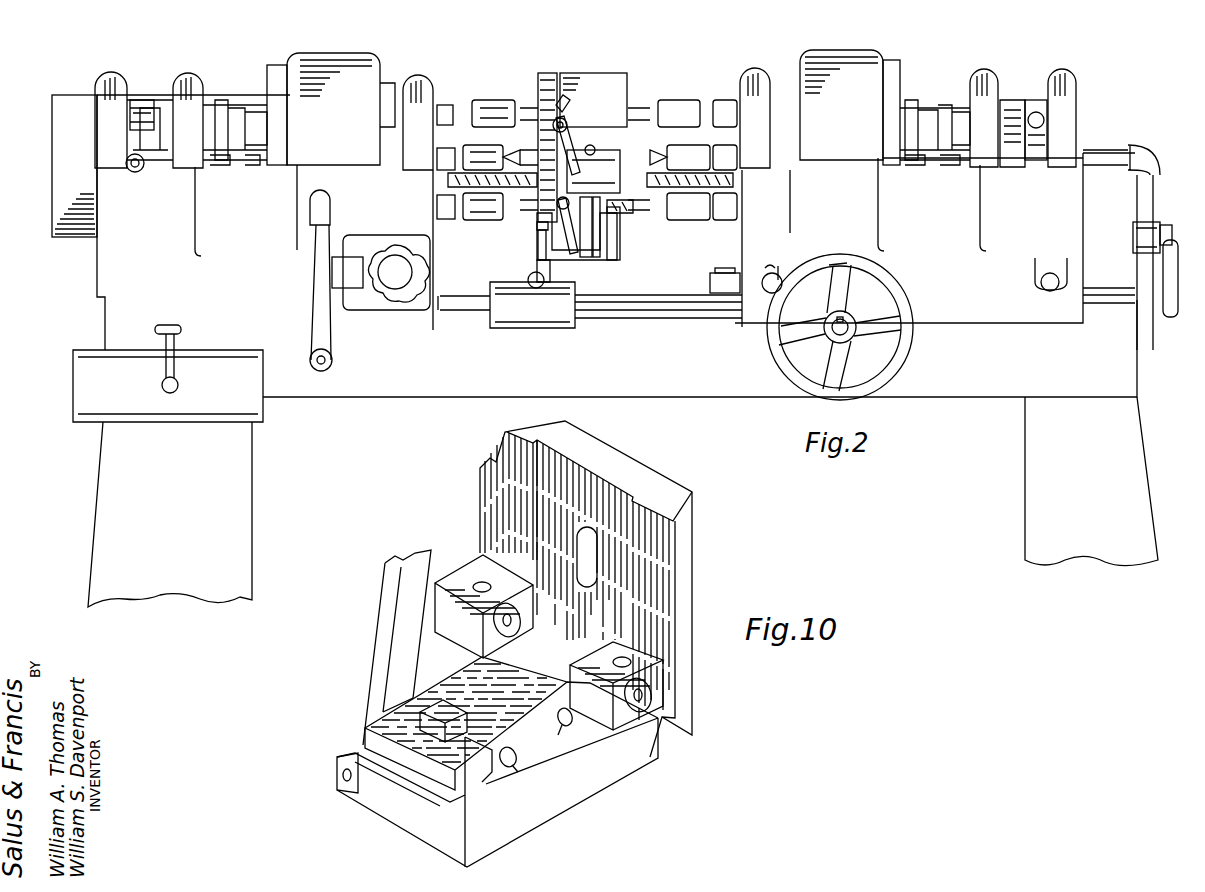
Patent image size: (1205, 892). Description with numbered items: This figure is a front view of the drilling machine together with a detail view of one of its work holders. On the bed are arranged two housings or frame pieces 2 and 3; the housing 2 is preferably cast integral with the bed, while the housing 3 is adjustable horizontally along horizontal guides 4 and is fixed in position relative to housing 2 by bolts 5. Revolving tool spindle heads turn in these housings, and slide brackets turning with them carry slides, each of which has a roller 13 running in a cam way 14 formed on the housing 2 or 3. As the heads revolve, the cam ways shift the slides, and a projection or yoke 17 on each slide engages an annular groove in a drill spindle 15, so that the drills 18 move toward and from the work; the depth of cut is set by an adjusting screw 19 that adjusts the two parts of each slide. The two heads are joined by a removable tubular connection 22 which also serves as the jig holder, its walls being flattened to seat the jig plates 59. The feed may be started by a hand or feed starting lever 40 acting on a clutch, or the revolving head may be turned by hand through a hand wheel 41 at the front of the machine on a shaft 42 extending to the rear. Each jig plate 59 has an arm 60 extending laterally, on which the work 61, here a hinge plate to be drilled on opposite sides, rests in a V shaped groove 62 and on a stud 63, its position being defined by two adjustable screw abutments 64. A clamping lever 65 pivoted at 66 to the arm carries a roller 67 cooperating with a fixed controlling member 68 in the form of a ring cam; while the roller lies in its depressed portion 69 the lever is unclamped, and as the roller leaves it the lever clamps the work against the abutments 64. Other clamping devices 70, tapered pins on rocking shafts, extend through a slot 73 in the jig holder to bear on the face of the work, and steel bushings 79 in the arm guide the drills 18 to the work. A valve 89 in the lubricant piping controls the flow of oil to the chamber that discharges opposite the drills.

In FIG. 2, the housing or frame piece 2 is at (115, 268).
In FIG. 2, the housing or frame piece 3 is at (1066, 192).
In FIG. 2, the horizontal guides 4 is at (1105, 300).
In FIG. 2, the bolts 5 is at (1042, 283).
In FIG. 2, the roller 13 is at (135, 102).
In FIG. 2, the cam way 14 is at (150, 150).
In FIG. 2, the drill spindles 15 is at (480, 150).
In FIG. 2, the projection or yoke 17 is at (234, 112).
In FIG. 2, the drills 18 is at (525, 210).
In FIG. 2, the adjusting screw 19 is at (127, 142).
In FIG. 2, the tubular connection 22 is at (458, 130).
In FIG. 2, the hand or feed starting lever 40 is at (318, 270).
In FIG. 2, the hand wheel 41 is at (910, 340).
In FIG. 2, the shaft 42 is at (845, 330).
In FIG. 2, the jig plate 59 is at (614, 195).
In FIG. 10, the jig plate 59 is at (685, 578).
In FIG. 2, the arm 60 is at (619, 252).
In FIG. 10, the arm 60 is at (383, 798).
In FIG. 2, the work 61 is at (589, 258).
In FIG. 10, the V shaped groove 62 is at (550, 660).
In FIG. 10, the stud 63 is at (420, 703).
In FIG. 2, the adjustable screw abutments 64 is at (612, 255).
In FIG. 10, the adjustable screw abutments 64 is at (536, 739).
In FIG. 2, the clamping lever 65 is at (572, 140).
In FIG. 10, the clamping lever 65 is at (393, 627).
In FIG. 2, the pivot 66 is at (563, 256).
In FIG. 10, the pivot 66 is at (340, 760).
In FIG. 2, the roller 67 is at (556, 120).
In FIG. 2, the fixed controlling member 68 is at (548, 73).
In FIG. 2, the depressed portion 69 is at (556, 108).
In FIG. 2, the clamping devices 70 is at (591, 145).
In FIG. 10, the opening or slot 73 is at (587, 545).
In FIG. 10, the steel bushings 79 is at (510, 593).
In FIG. 2, the valve 89 is at (1165, 225).